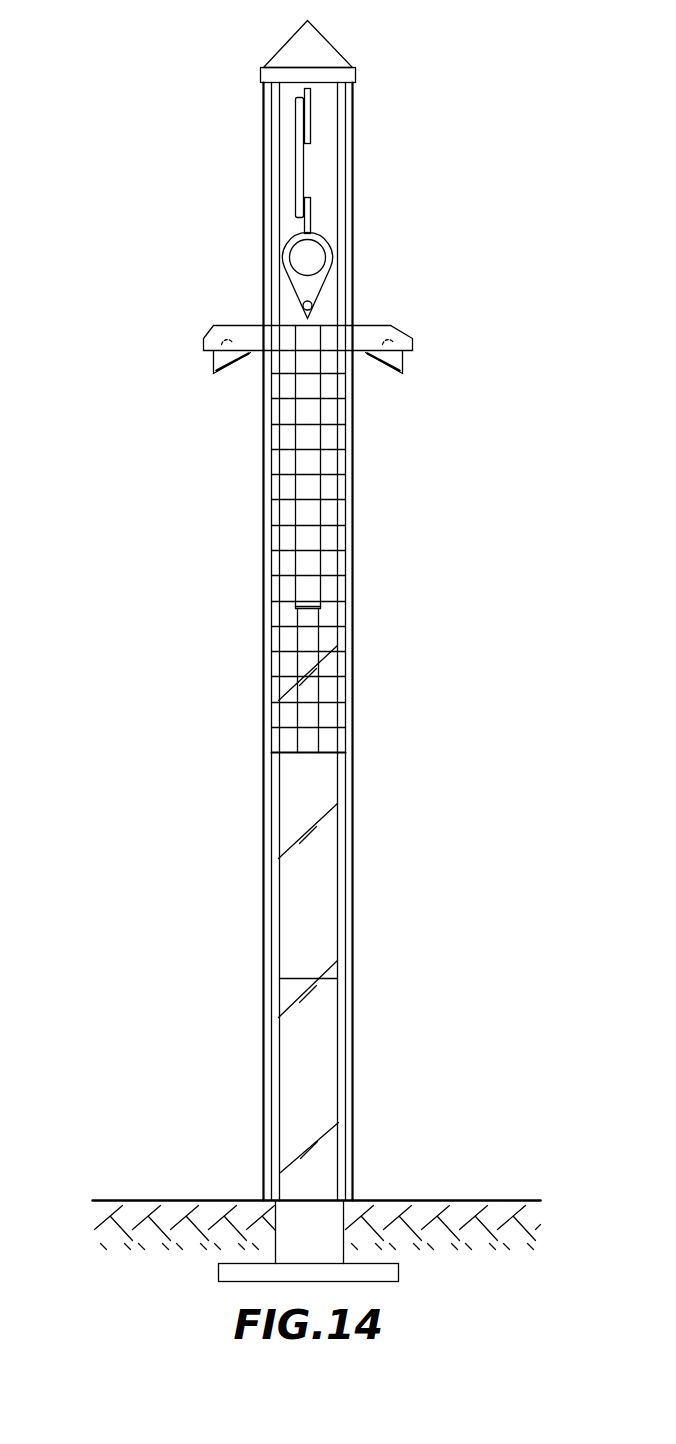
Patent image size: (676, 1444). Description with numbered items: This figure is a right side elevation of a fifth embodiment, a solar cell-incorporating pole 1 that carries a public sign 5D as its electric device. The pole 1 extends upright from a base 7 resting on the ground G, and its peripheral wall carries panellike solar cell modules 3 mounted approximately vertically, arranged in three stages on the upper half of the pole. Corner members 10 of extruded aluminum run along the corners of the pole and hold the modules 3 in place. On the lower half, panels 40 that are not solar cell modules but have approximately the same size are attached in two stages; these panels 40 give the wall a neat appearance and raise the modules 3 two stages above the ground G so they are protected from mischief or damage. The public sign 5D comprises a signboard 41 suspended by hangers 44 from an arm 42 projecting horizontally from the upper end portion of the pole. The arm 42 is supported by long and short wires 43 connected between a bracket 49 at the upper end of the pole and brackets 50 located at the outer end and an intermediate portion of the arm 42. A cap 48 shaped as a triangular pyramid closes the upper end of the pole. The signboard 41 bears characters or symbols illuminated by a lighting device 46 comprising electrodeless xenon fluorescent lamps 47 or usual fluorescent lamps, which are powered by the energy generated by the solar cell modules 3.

The pole 1 is at (226, 146).
The solar cell modules 3 is at (285, 468).
The public sign 5D is at (320, 476).
The base 7 is at (377, 1271).
The corner members 10 is at (263, 775).
The panels 40 is at (317, 942).
The signboard 41 is at (322, 583).
The arm 42 is at (305, 257).
The wires 43 is at (290, 177).
The hangers 44 is at (300, 300).
The lighting device 46 is at (230, 325).
The electrodeless xenon fluorescent lamps 47 is at (230, 374).
The cap 48 is at (307, 46).
The bracket 49 is at (310, 117).
The brackets 50 is at (308, 213).
The ground G is at (473, 1200).